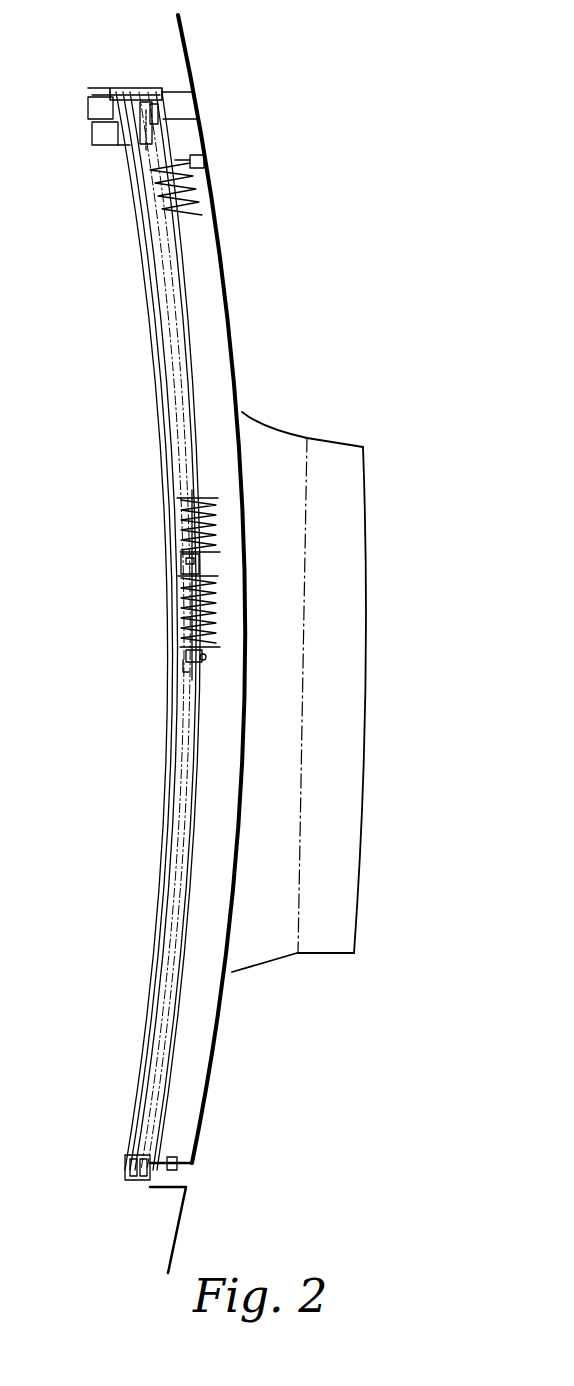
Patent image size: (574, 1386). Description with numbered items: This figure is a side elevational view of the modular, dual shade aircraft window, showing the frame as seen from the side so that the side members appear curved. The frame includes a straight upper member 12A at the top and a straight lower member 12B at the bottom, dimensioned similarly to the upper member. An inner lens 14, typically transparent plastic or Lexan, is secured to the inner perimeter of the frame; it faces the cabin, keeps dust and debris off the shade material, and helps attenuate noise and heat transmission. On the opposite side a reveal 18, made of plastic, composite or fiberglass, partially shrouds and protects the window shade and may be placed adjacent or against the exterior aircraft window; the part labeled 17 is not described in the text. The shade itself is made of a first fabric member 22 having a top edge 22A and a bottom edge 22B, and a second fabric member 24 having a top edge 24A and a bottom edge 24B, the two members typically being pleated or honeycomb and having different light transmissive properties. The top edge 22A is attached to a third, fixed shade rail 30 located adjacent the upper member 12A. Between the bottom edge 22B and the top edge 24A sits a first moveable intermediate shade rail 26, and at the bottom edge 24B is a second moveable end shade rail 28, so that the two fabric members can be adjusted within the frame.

The upper member 12A is at (131, 99).
The lower member 12B is at (130, 1182).
The inner lens 14 is at (158, 383).
The handle 17 is at (366, 832).
The reveal 18 is at (277, 962).
The first fabric member 22 is at (218, 513).
The top edge 22A is at (196, 172).
The bottom edge 22B is at (219, 546).
The second fabric member 24 is at (219, 608).
The top edge 24A is at (178, 599).
The bottom edge 24B is at (220, 640).
The first moveable shade rail 26 is at (181, 557).
The second moveable shade rail 28 is at (172, 706).
The third shade rail 30 is at (192, 156).